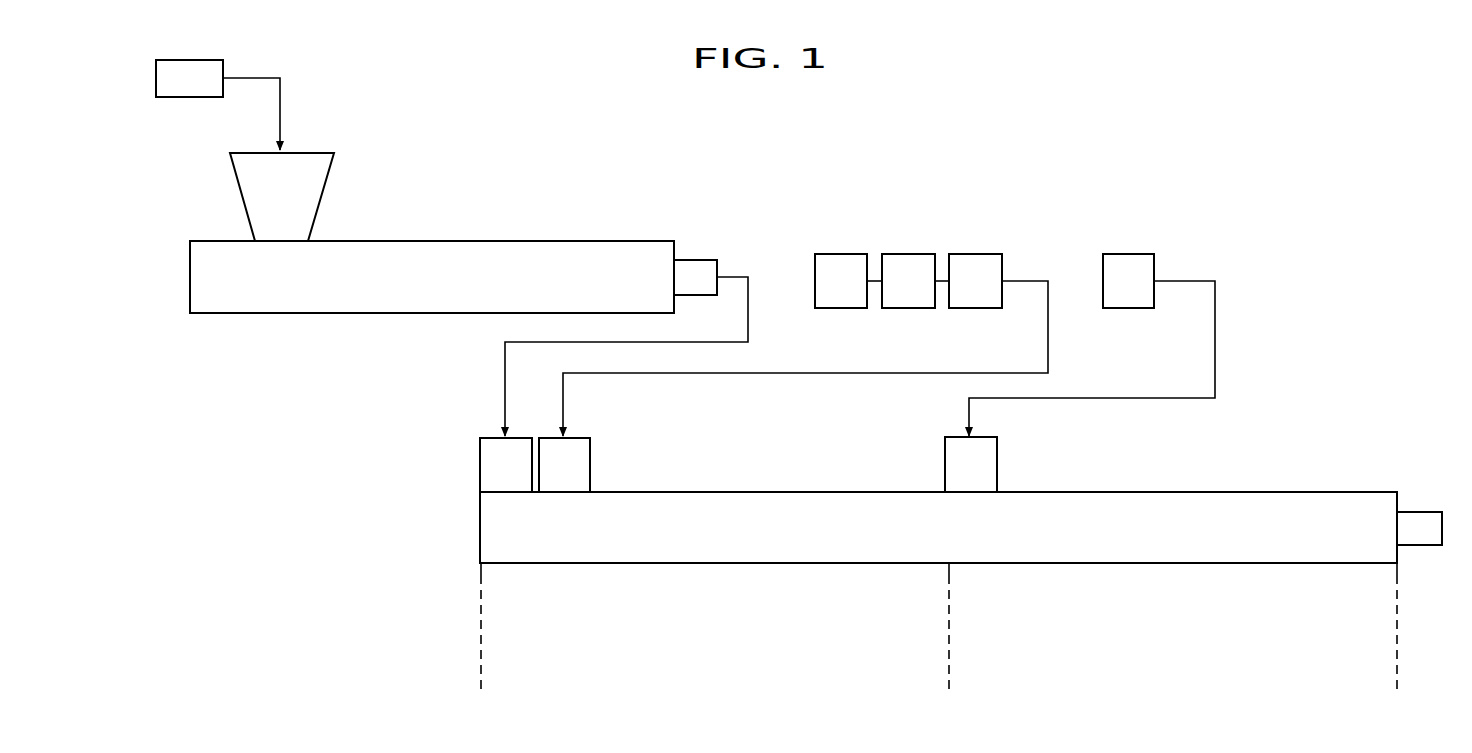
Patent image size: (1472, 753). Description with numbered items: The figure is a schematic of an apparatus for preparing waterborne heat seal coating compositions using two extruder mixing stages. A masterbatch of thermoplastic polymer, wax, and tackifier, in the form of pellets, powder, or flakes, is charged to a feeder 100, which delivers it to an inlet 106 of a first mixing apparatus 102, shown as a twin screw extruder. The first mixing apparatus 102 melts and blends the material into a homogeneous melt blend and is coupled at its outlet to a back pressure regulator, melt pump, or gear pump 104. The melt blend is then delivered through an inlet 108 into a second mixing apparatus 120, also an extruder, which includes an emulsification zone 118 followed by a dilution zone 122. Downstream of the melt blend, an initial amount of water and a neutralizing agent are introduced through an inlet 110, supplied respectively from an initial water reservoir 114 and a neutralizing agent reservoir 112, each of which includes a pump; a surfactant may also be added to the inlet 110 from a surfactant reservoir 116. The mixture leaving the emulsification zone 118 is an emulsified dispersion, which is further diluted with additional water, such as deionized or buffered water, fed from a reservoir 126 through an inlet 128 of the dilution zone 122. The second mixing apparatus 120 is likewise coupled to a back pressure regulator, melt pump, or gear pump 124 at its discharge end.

The feeder 100 is at (156, 78).
The first mixing apparatus 102 is at (451, 239).
The back pressure regulator, melt pump, or gear pump 104 is at (688, 259).
The inlet 106 is at (240, 192).
The inlet 108 is at (480, 464).
The inlet 110 is at (590, 473).
The neutralizing agent reservoir 112 is at (832, 253).
The initial water reservoir 114 is at (912, 253).
The surfactant reservoir 116 is at (990, 253).
The emulsification zone 118 is at (948, 627).
The second mixing apparatus 120 is at (761, 490).
The dilution zone 122 is at (1396, 627).
The back pressure regulator, melt pump, or gear pump 124 is at (1424, 512).
The reservoir 126 is at (1135, 253).
The inlet 128 is at (997, 465).